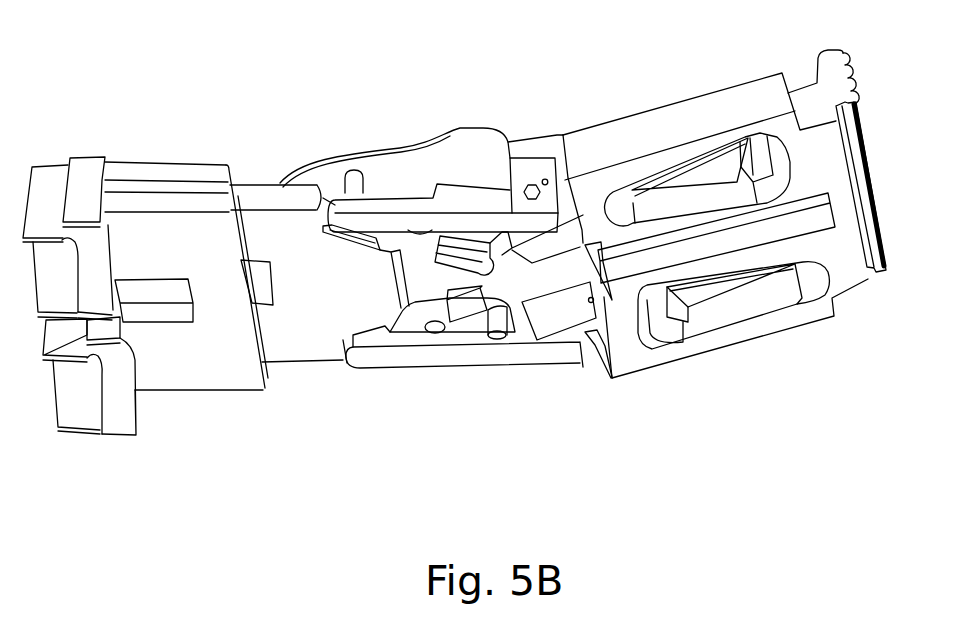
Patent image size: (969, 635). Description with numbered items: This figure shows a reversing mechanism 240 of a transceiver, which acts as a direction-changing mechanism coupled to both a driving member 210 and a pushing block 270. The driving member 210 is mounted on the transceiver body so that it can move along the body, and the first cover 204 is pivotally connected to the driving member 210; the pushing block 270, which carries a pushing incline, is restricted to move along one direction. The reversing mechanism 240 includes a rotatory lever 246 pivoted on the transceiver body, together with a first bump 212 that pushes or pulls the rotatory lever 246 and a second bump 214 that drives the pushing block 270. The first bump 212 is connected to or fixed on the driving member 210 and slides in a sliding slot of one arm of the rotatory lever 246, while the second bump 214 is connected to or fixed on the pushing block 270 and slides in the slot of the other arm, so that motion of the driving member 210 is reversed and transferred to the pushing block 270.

The first cover 204 is at (866, 137).
The driving member 210 is at (510, 158).
The first bump 212 is at (355, 170).
The second bump 214 is at (468, 232).
The reversing mechanism 240 is at (437, 68).
The rotatory lever 246 is at (380, 198).
The pushing block 270 is at (541, 125).